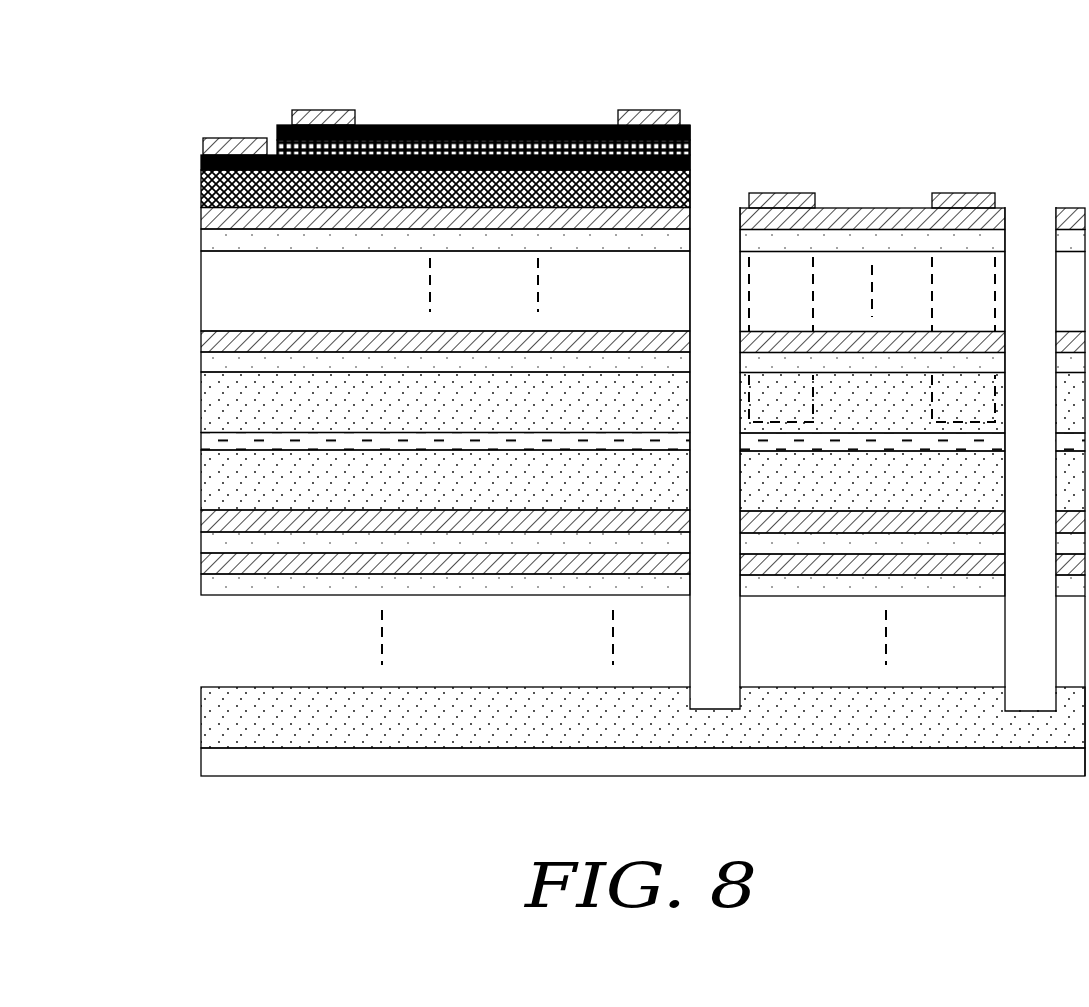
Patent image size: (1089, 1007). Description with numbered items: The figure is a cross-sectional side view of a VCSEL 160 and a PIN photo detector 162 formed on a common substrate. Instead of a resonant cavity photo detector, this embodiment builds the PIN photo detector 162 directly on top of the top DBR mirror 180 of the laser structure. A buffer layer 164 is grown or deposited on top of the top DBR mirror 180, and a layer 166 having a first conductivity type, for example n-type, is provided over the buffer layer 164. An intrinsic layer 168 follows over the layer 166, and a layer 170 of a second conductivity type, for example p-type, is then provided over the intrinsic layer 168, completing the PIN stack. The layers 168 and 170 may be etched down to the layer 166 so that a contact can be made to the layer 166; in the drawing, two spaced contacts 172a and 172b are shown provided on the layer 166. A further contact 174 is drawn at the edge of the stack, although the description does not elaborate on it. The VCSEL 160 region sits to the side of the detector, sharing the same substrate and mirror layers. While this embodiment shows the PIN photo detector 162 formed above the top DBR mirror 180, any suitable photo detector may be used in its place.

The VCSEL 160 is at (914, 142).
The PIN photo detector 162 is at (449, 109).
The buffer layer 164 is at (202, 175).
The layer having a first conductivity type 166 is at (202, 158).
The intrinsic layer 168 is at (282, 150).
The layer of a second conductivity type 170 is at (691, 131).
The contact 172a is at (312, 110).
The contact 172b is at (640, 110).
The contact 174 is at (232, 138).
The top DBR mirror 180 is at (190, 206).